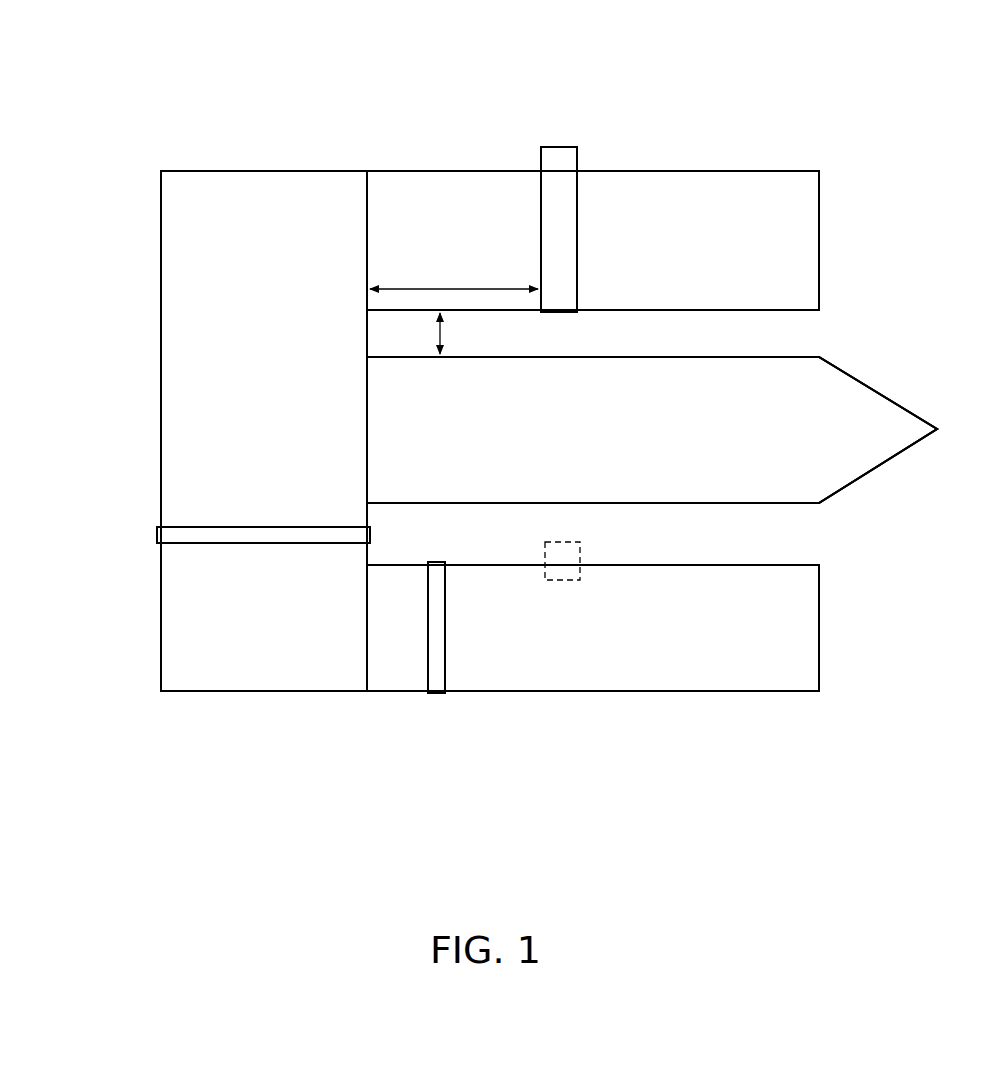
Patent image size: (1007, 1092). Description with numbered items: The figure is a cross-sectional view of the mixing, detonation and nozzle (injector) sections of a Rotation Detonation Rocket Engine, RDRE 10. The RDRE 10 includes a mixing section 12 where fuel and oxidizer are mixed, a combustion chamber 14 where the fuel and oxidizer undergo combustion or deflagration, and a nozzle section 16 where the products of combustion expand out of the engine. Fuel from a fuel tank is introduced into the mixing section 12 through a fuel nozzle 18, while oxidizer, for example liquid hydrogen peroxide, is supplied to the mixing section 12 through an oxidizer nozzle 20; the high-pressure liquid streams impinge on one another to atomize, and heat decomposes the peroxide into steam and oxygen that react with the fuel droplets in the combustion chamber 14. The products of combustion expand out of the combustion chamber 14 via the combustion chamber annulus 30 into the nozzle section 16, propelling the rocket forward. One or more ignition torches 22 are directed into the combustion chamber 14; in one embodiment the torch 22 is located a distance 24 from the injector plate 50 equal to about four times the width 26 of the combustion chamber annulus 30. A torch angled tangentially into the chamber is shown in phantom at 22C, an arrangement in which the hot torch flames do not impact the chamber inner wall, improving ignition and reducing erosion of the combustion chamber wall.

The Rotation Detonation Rocket Engine (RDRE) 10 is at (133, 66).
The mixing section 12 is at (576, 708).
The combustion chamber 14 is at (693, 787).
The nozzle section 16 is at (937, 708).
The fuel nozzle 18 is at (428, 628).
The oxidizer nozzle 20 is at (264, 545).
The ignition torch 22 is at (558, 146).
The tangentially angled torch 22C is at (580, 555).
The distance 24 is at (455, 289).
The width of the combustion chamber annulus 26 is at (430, 333).
The combustion chamber annulus 30 is at (818, 537).
The injector plate 50 is at (200, 302).